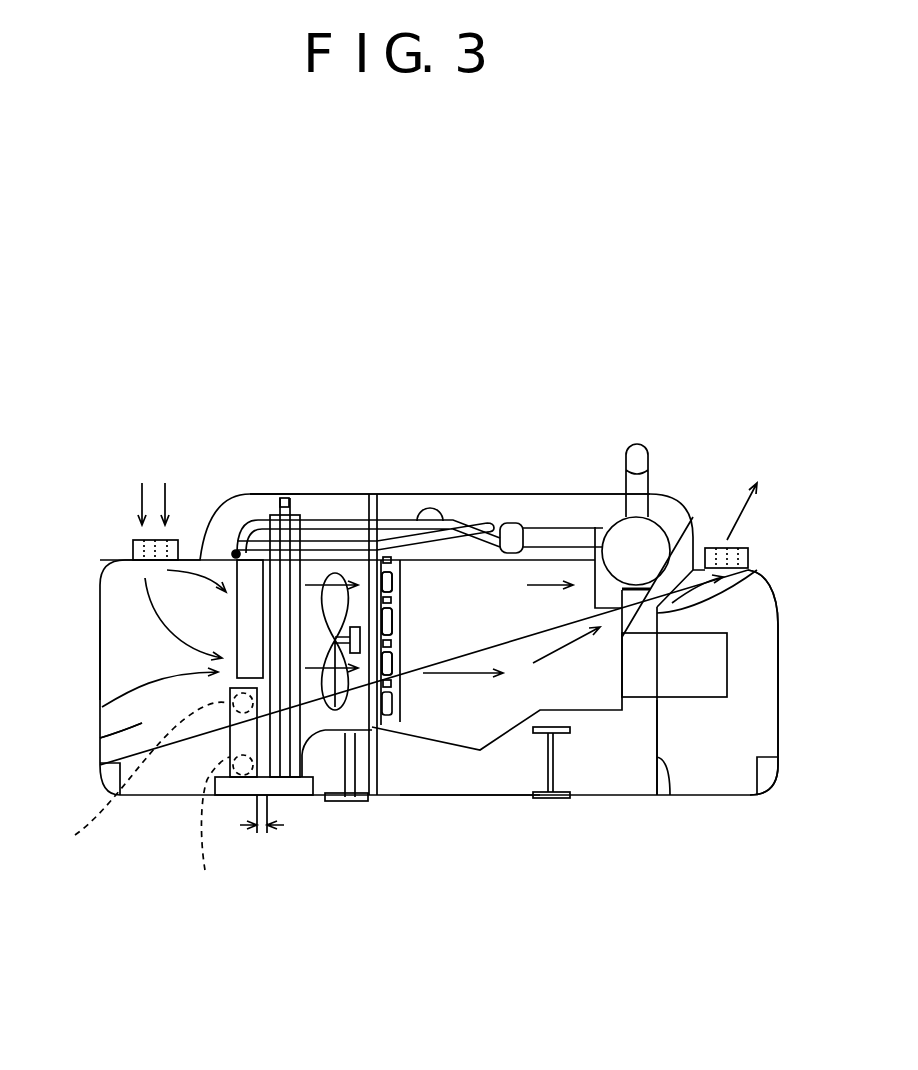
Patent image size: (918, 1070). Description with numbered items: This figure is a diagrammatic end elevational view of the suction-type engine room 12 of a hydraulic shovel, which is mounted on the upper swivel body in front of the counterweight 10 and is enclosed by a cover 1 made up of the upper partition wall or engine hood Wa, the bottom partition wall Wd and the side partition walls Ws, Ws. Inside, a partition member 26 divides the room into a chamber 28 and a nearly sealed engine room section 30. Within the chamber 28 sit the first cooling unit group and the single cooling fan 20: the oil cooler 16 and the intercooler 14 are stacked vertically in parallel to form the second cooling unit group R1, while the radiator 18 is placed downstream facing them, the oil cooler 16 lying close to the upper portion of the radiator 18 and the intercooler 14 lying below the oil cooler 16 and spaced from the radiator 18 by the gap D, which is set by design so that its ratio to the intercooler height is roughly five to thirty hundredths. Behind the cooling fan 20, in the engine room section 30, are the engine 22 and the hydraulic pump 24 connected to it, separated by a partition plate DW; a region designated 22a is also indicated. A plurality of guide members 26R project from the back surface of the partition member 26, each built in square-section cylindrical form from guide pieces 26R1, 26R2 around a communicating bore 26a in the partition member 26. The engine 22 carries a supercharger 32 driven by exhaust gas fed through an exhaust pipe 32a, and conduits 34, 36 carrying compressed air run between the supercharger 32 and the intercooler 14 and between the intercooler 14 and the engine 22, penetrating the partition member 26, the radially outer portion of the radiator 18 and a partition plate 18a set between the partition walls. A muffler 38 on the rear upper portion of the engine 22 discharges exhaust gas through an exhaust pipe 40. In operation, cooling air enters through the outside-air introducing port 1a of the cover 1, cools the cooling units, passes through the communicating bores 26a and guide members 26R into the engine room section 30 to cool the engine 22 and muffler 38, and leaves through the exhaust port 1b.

The cover 1 is at (419, 470).
The outside-air introducing port 1a is at (133, 545).
The exhaust port 1b is at (747, 548).
The counterweight 10 is at (673, 494).
The engine room 12 is at (608, 467).
The intercooler 14 is at (232, 728).
The oil cooler 16 is at (237, 602).
The radiator 18 is at (283, 607).
The partition plate 18a is at (203, 545).
The cooling fan 20 is at (326, 732).
The engine 22 is at (457, 723).
The duct housing outlet portion 22a is at (750, 565).
The hydraulic pump 24 is at (697, 700).
The partition member 26 is at (372, 494).
The communicating bore 26a is at (362, 578).
The guide member 26R is at (391, 751).
The guide piece 26R1 is at (394, 582).
The guide piece 26R2 is at (394, 568).
The chamber 28 is at (100, 735).
The nearly sealed engine room section 30 is at (493, 494).
The supercharger 32 is at (513, 494).
The exhaust pipe 32a is at (567, 494).
The conduit 34 is at (452, 494).
The conduit 36 is at (389, 494).
The muffler 38 is at (647, 557).
The exhaust pipe 40 is at (640, 437).
The upper partition wall Wa is at (470, 494).
The side partition wall Ws is at (100, 668).
The second cooling unit group R1 is at (100, 707).
The bottom partition wall Wd is at (490, 793).
The partition plate DW is at (657, 795).
The gap D is at (228, 736).